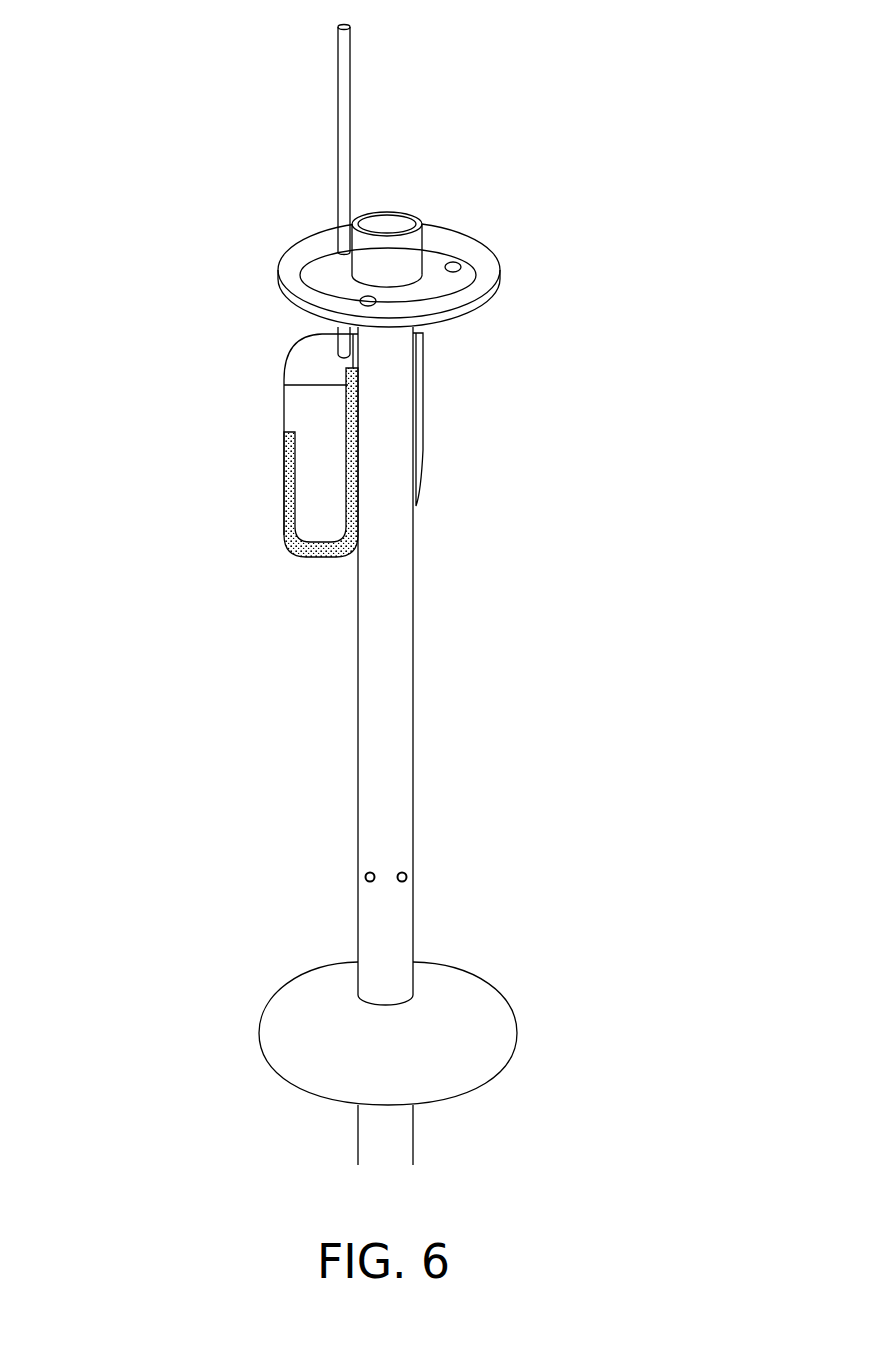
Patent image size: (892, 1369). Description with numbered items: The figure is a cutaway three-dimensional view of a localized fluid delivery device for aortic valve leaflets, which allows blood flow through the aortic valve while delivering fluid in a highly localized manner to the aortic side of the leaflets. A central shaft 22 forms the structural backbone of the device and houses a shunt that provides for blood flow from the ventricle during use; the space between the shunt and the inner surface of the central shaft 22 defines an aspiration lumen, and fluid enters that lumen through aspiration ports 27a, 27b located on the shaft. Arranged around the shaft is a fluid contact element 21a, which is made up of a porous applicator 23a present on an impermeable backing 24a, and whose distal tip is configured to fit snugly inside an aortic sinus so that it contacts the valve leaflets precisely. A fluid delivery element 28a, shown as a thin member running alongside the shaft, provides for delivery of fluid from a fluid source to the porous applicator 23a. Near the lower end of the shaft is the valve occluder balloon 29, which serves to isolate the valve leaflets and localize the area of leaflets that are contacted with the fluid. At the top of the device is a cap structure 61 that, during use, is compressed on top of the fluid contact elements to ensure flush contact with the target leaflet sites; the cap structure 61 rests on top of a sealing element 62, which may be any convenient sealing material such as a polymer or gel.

The fluid contact element 21a is at (303, 367).
The central shaft 22 is at (400, 565).
The porous applicator 23a is at (290, 498).
The impermeable backing 24a is at (302, 417).
The aspiration port 27a is at (404, 876).
The aspiration port 27b is at (368, 876).
The fluid delivery element 28a is at (340, 89).
The valve occluder balloon 29 is at (476, 1033).
The cap structure 61 is at (437, 245).
The sealing element 62 is at (488, 272).